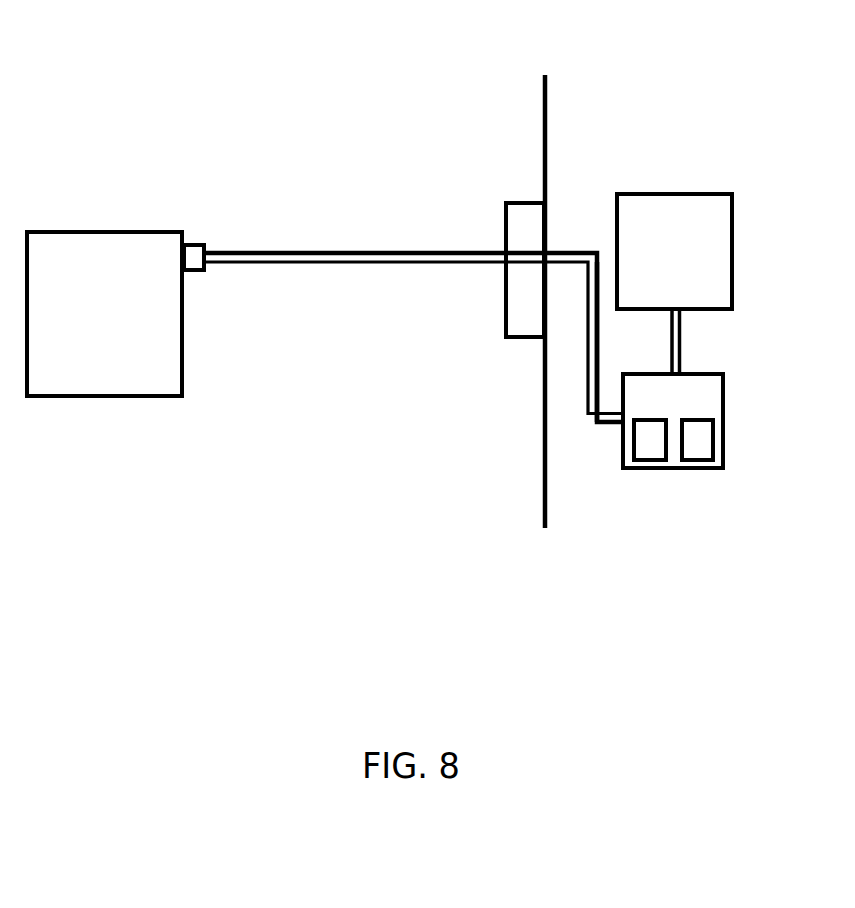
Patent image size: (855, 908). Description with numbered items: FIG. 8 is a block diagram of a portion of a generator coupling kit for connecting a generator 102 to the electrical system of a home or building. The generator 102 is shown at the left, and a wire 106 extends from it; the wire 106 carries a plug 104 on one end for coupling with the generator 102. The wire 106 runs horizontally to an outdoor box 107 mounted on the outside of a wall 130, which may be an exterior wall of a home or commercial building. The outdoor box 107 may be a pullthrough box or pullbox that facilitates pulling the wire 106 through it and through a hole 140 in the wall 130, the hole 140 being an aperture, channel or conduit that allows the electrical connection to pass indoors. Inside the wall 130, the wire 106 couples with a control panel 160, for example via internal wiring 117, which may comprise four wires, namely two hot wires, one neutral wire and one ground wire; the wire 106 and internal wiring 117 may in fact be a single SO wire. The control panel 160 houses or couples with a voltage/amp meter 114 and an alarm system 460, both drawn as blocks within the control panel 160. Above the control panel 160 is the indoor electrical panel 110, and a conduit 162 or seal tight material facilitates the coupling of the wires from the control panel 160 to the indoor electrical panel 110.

The generator 102 is at (42, 272).
The plug 104 is at (194, 244).
The wire 106 is at (322, 250).
The outdoor box 107 is at (515, 202).
The indoor electrical panel 110 is at (632, 224).
The voltage/amp meter 114 is at (649, 462).
The internal wiring 117 is at (596, 424).
The wall 130 is at (543, 100).
The hole 140 is at (558, 227).
The control panel 160 is at (638, 402).
The conduit 162 is at (682, 350).
The alarm system 460 is at (698, 462).